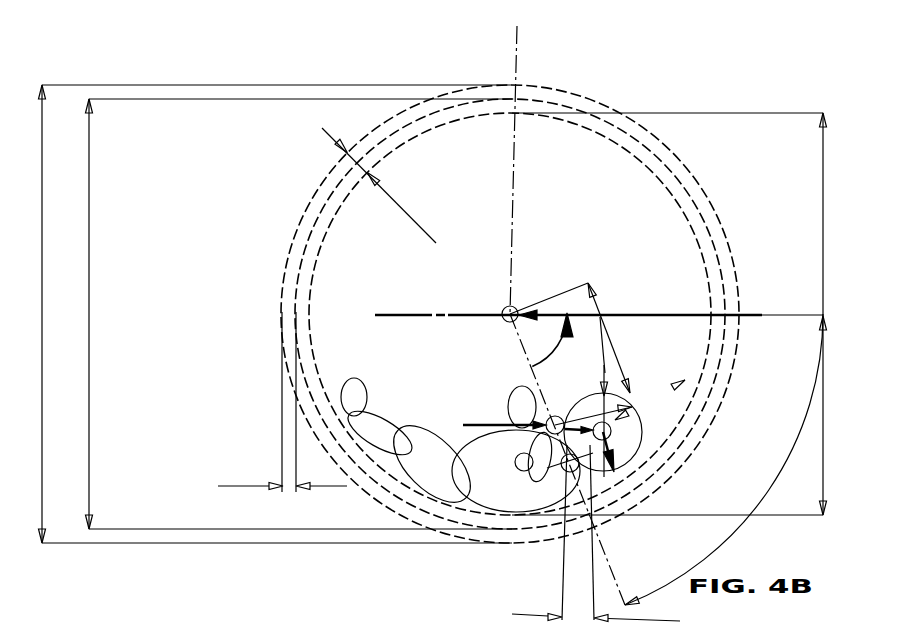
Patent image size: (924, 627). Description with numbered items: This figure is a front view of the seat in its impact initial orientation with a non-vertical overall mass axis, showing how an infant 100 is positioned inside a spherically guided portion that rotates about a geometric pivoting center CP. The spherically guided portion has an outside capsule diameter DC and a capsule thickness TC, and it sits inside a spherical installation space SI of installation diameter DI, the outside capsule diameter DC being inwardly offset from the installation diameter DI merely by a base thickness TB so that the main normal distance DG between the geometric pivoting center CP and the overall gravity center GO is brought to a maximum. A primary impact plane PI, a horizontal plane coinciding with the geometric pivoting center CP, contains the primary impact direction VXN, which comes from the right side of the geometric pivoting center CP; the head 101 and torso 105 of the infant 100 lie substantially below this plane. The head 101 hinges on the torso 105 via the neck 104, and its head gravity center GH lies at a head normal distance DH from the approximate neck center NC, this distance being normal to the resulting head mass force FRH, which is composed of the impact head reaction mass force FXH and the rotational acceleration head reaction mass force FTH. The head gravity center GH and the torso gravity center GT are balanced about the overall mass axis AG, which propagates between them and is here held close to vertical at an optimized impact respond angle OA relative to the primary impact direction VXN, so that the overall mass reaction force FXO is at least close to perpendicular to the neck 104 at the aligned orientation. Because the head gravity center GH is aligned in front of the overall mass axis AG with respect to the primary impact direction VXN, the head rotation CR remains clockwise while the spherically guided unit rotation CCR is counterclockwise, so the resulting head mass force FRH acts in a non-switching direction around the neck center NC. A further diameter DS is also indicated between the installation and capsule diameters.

The infant 100 is at (376, 534).
The head 101 is at (637, 455).
The neck 104 is at (616, 477).
The torso 105 is at (458, 503).
The geometric pivoting center CP is at (504, 167).
The spherical installation space SI is at (567, 92).
The primary impact direction VXN is at (630, 315).
The capsule thickness TC is at (381, 185).
The primary impact plane PI is at (407, 314).
The outside capsule diameter DC is at (669, 314).
The diameter S DS is at (288, 314).
The installation diameter DI is at (265, 314).
The resulting head mass force FRH is at (606, 371).
The rotational acceleration head reaction mass force FTH is at (615, 420).
The head gravity center GH is at (610, 427).
The head rotation CR is at (611, 433).
The main normal distance DG is at (576, 380).
The spherically guided unit rotation CCR is at (547, 348).
The overall mass reaction force FXO is at (548, 421).
The impact head reaction mass force FXH is at (547, 428).
The base thickness TB is at (282, 402).
The optimized impact respond angle OA is at (668, 459).
The overall mass axis AG is at (580, 458).
The torso gravity center GT is at (548, 432).
The overall gravity center GO is at (563, 470).
The neck center NC is at (572, 470).
The head normal distance DH is at (596, 533).